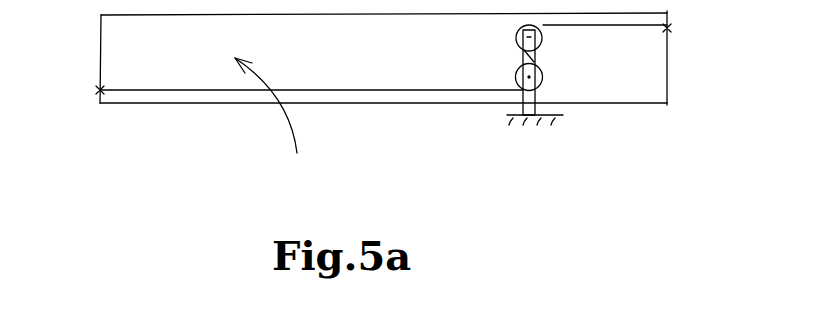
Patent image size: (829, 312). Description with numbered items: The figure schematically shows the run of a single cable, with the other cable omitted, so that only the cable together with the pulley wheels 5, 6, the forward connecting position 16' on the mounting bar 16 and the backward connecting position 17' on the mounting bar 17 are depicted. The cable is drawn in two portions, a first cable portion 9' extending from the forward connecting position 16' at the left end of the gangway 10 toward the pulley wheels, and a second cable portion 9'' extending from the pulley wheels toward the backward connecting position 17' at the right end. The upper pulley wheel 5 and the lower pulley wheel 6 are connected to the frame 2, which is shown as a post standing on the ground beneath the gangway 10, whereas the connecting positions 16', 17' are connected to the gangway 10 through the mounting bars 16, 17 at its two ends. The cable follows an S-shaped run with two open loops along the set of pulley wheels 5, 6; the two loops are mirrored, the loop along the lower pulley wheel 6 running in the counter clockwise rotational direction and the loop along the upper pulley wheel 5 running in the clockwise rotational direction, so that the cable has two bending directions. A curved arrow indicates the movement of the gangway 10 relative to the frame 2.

The frame 2 is at (532, 108).
The upper pulley wheel 5 is at (537, 38).
The lower pulley wheel 6 is at (520, 77).
The cable 9' is at (311, 136).
The cable 9'' is at (605, 105).
The gangway 10 is at (275, 124).
The mounting bar 16 is at (76, 59).
The forward connecting position 16' is at (60, 110).
The mounting bar 17 is at (704, 58).
The backward connecting position 17' is at (703, 20).